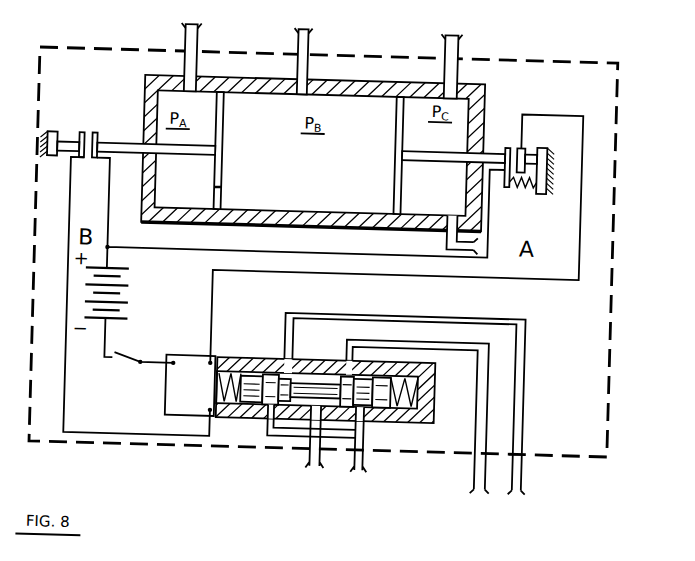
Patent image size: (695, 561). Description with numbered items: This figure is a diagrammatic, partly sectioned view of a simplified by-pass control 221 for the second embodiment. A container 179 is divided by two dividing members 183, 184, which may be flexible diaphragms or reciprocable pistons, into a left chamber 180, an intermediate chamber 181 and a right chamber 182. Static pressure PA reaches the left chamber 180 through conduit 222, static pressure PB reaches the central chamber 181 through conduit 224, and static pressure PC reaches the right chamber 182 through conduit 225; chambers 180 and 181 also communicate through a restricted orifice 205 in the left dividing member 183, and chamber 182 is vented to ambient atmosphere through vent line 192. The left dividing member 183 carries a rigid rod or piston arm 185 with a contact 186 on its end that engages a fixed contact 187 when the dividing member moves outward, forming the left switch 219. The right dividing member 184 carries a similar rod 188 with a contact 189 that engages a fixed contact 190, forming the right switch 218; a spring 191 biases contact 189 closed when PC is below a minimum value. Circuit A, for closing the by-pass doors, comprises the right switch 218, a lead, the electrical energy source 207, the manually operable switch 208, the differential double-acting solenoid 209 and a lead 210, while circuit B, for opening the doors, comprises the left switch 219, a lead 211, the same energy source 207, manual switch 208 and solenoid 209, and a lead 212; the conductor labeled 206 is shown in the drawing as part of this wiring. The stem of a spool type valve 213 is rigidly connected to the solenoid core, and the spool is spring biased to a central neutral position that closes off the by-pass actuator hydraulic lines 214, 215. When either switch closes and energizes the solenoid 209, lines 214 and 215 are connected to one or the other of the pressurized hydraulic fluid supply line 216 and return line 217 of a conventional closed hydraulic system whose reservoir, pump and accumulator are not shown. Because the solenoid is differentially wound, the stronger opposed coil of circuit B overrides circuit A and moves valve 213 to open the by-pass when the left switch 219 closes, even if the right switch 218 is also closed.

The container 179 is at (333, 72).
The left chamber 180 is at (194, 179).
The intermediate chamber 181 is at (307, 176).
The right chamber 182 is at (456, 188).
The left dividing member 183 is at (220, 95).
The right dividing member 184 is at (405, 118).
The rigid rod or piston arm 185 is at (115, 143).
The contact 186 is at (99, 131).
The fixed contact 187 is at (82, 132).
The rod 188 is at (431, 151).
The contact 189 is at (509, 135).
The fixed contact 190 is at (526, 134).
The spring 191 is at (535, 180).
The vent line 192 is at (453, 227).
The restricted orifice 205 is at (226, 182).
The conductor 206 is at (296, 245).
The electrical energy source 207 is at (125, 273).
The manually operable switch 208 is at (132, 358).
The differential double-acting solenoid 209 is at (199, 363).
The lead 210 is at (478, 268).
The lead 211 is at (113, 226).
The lead 212 is at (74, 269).
The spool type valve 213 is at (393, 393).
The by-pass actuator hydraulic line 214 is at (325, 307).
The by-pass actuator hydraulic line 215 is at (360, 329).
The pressurized hydraulic fluid supply line 216 is at (321, 447).
The return line 217 is at (377, 451).
The right switch 218 is at (516, 131).
The left switch 219 is at (90, 118).
The by-pass control 221 is at (597, 38).
The conduit 222 is at (193, 39).
The conduit 224 is at (303, 38).
The conduit 225 is at (452, 39).